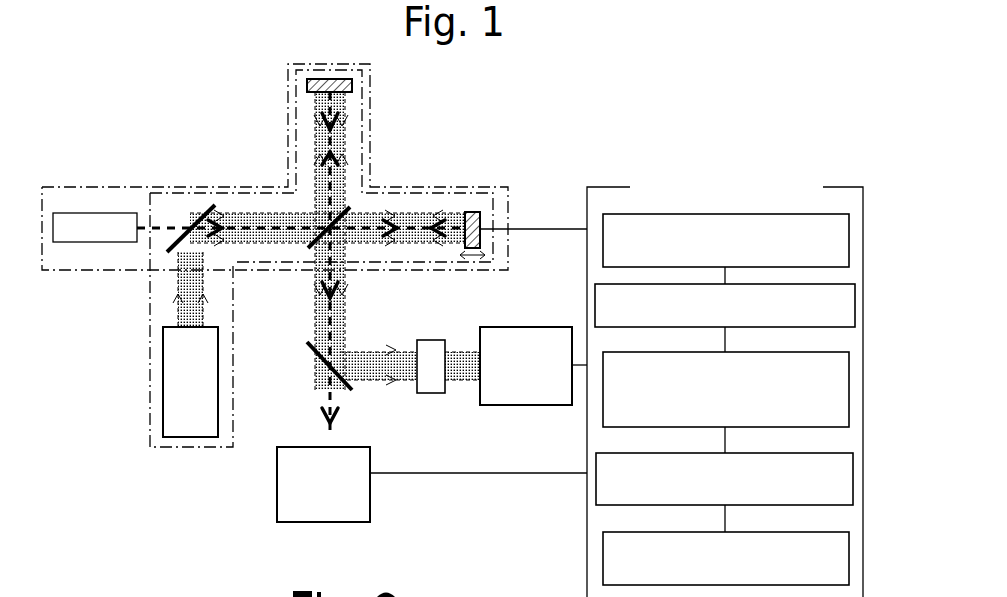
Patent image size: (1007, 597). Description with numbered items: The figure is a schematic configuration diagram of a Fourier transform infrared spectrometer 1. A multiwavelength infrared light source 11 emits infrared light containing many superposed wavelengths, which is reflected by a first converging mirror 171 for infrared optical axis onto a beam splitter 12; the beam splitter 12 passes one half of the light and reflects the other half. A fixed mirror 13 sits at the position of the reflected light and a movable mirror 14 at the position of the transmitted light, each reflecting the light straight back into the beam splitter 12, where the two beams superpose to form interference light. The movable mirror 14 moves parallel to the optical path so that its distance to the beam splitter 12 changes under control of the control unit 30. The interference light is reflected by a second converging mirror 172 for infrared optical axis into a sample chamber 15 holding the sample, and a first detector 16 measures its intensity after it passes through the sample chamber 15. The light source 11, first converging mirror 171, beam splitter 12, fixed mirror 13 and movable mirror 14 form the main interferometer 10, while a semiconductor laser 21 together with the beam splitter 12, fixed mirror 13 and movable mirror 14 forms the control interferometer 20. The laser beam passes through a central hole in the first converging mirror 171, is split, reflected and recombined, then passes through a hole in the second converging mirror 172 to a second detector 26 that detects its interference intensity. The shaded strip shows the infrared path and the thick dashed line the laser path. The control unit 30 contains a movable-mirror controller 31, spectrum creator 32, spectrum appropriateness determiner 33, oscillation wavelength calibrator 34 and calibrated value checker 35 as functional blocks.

The Fourier transform infrared spectrometer 1 is at (727, 118).
The main interferometer 10 is at (148, 448).
The multiwavelength infrared light source 11 is at (218, 437).
The beam splitter 12 is at (347, 208).
The fixed mirror 13 is at (352, 83).
The movable mirror 14 is at (480, 212).
The sample chamber 15 is at (443, 393).
The first detector 16 is at (480, 333).
The control interferometer 20 is at (42, 187).
The semiconductor laser 21 is at (53, 240).
The second detector 26 is at (370, 505).
The control unit 30 is at (863, 187).
The movable-mirror controller 31 is at (849, 215).
The spectrum creator 32 is at (855, 282).
The spectrum appropriateness determiner 33 is at (849, 353).
The oscillation wavelength calibrator 34 is at (853, 453).
The calibrated value checker 35 is at (849, 532).
The first converging mirror for infrared optical axis 171 is at (213, 207).
The second converging mirror for infrared optical axis 172 is at (302, 363).